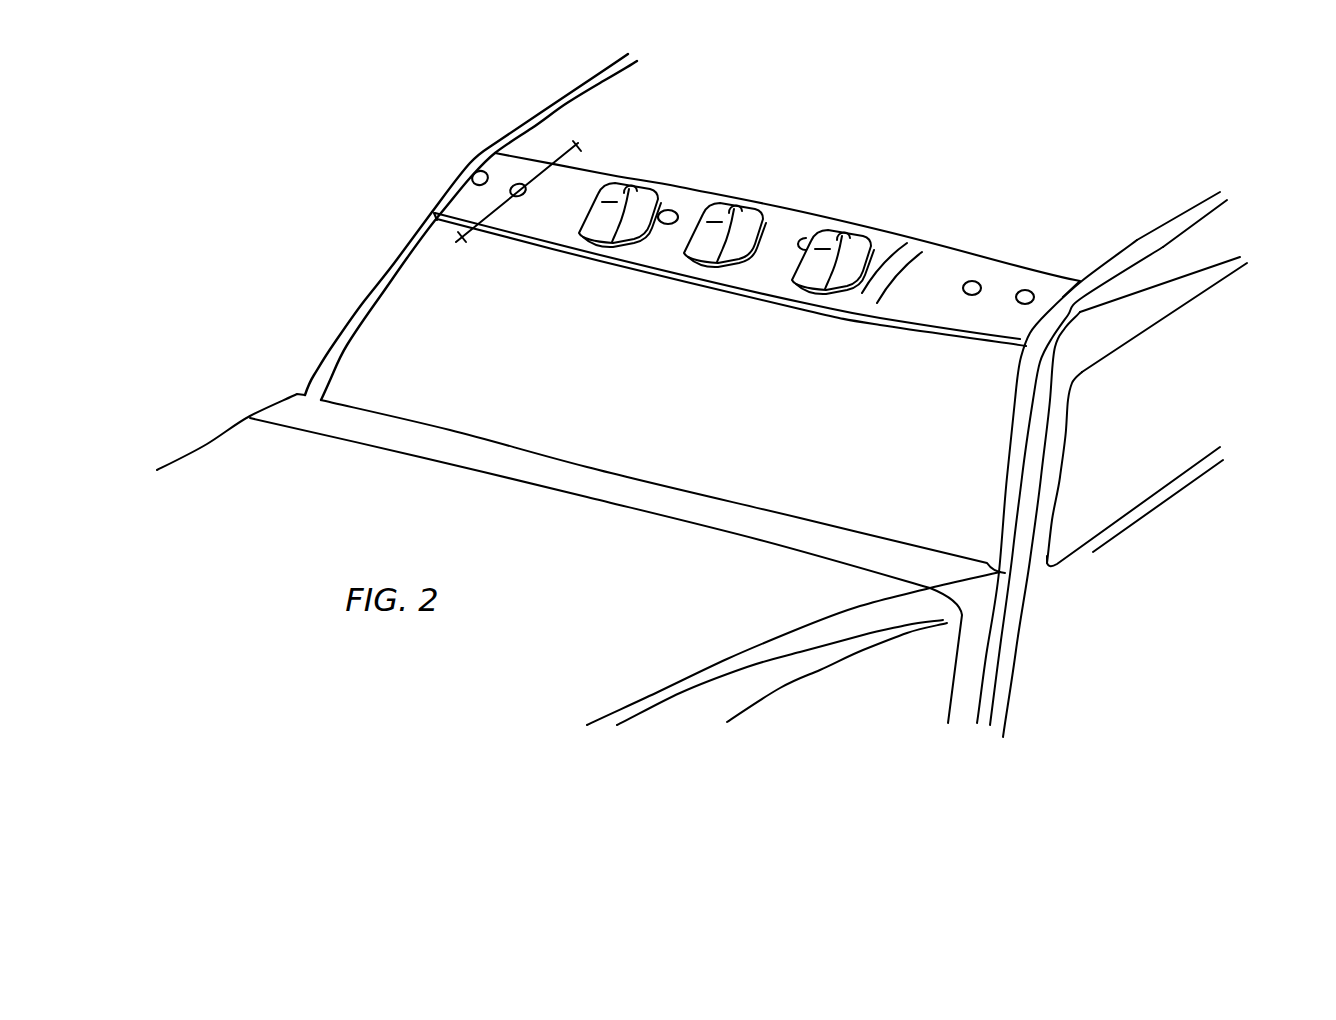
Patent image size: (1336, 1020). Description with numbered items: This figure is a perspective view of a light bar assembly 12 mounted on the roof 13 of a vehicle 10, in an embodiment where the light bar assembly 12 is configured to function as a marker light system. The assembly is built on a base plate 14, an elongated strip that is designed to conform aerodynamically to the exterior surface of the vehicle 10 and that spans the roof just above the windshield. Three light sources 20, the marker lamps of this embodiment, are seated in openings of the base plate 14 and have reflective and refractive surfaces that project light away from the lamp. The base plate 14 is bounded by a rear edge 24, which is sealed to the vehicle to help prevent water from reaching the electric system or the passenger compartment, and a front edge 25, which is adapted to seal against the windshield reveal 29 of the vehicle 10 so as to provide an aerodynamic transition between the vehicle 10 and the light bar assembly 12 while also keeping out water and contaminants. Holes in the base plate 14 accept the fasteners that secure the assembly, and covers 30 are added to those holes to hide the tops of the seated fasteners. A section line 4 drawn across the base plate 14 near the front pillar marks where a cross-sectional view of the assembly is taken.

The section line 4- 4 is at (530, 142).
The vehicle 10 is at (730, 445).
The light bar assembly 12 is at (667, 227).
The roof 13 is at (1118, 230).
The base plate 14 is at (1010, 278).
The light sources 20 is at (637, 190).
The rear edge 24 is at (950, 247).
The front edge 25 is at (425, 223).
The windshield reveal 29 is at (500, 233).
The covers 30 is at (972, 282).